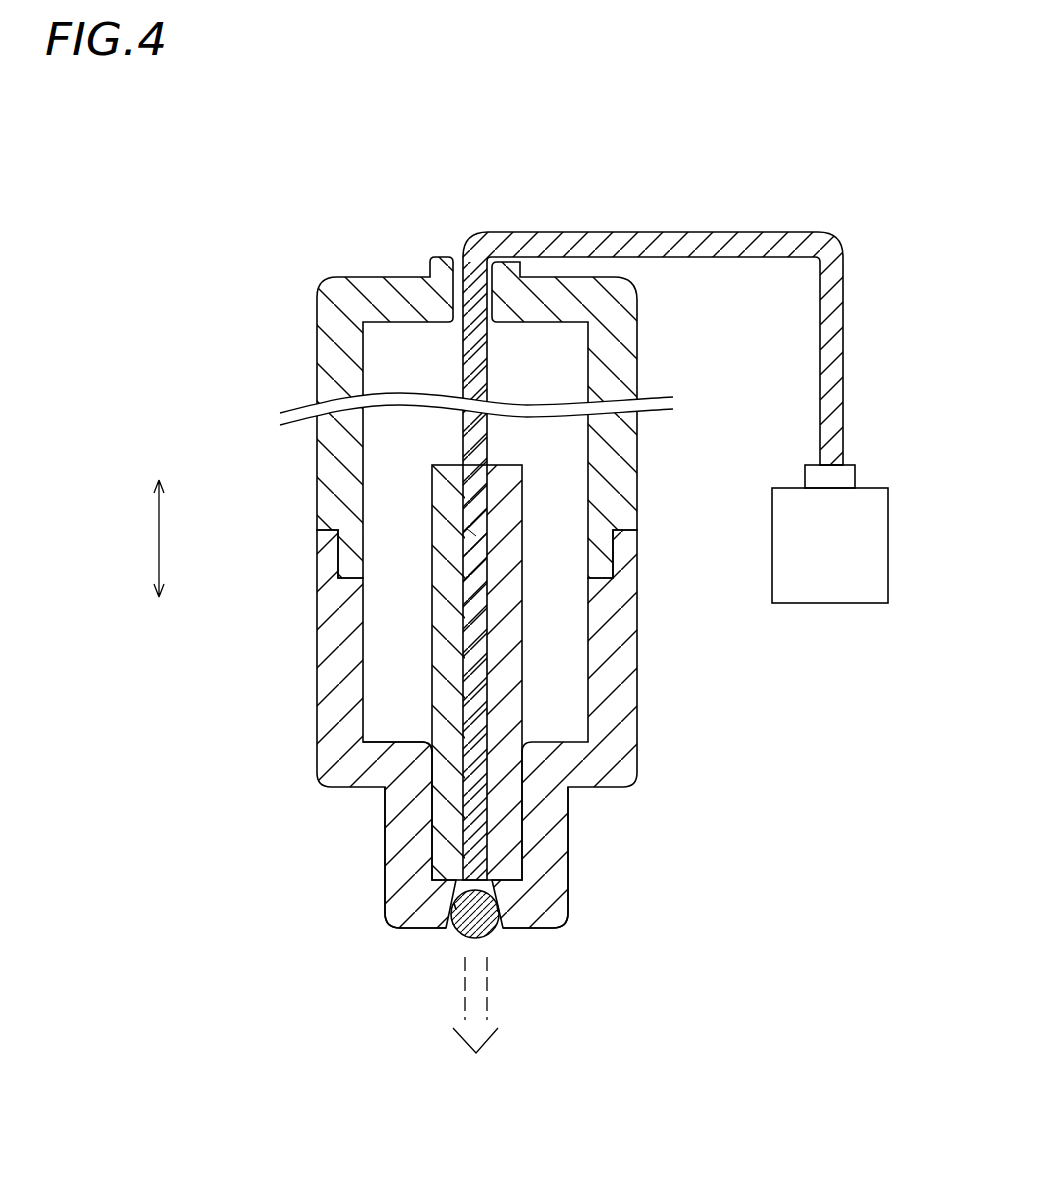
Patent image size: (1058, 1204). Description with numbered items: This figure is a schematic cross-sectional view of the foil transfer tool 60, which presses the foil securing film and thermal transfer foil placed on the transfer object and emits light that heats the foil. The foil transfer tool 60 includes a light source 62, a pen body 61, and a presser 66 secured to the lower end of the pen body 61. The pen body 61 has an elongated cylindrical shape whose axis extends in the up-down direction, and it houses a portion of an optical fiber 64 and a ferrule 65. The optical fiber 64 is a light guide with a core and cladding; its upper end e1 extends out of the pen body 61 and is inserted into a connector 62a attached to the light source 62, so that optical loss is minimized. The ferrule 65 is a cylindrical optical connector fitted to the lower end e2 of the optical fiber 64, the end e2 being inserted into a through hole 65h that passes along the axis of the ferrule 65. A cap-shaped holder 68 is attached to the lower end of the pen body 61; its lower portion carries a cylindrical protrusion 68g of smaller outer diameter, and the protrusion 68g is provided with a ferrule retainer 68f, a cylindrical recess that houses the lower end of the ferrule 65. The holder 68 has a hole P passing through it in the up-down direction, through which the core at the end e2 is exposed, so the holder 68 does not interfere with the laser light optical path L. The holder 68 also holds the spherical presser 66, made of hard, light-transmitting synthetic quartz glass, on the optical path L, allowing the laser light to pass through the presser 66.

The foil transfer tool 60 is at (878, 182).
The pen body 61 is at (323, 282).
The light source 62 is at (828, 603).
The connector 62a is at (857, 477).
The optical fiber 64 is at (682, 232).
The ferrule 65 is at (432, 497).
The through hole 65h is at (465, 539).
The presser 66 is at (463, 940).
The holder 68 is at (303, 647).
The ferrule retainer 68f is at (432, 750).
The protrusion 68g is at (623, 846).
The upper end of the optical fiber e1 is at (818, 463).
The lower end of the optical fiber e2 is at (455, 907).
The hole P is at (498, 908).
The laser light optical path L is at (488, 991).